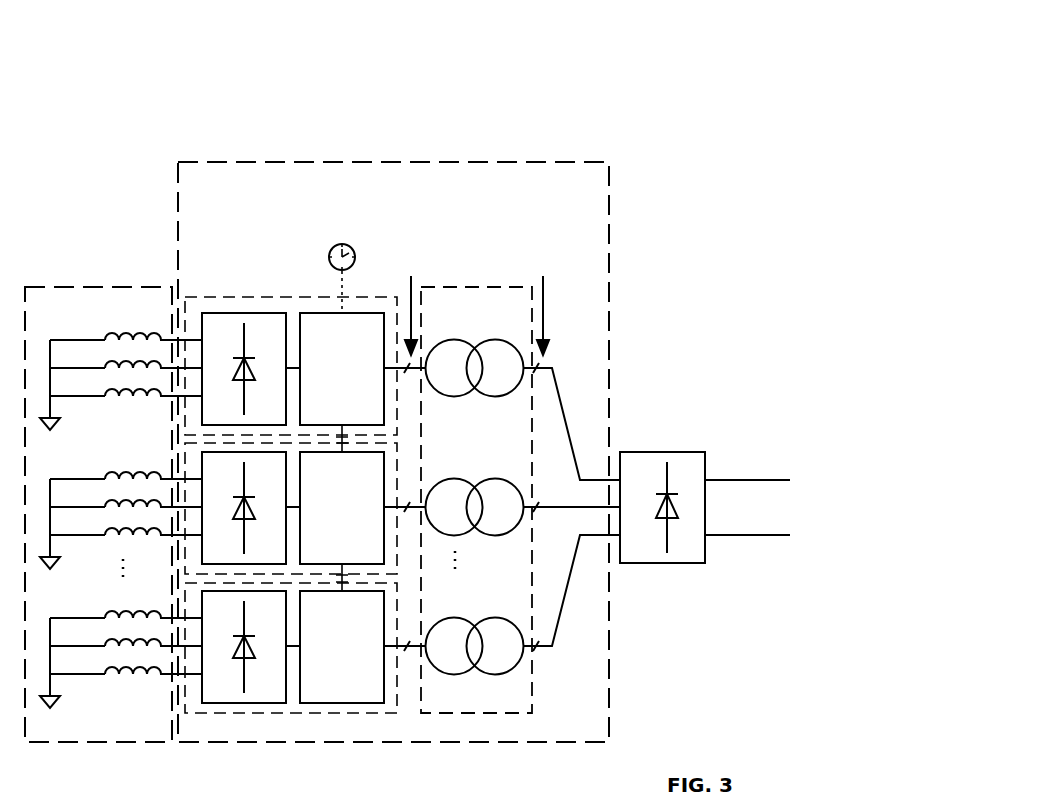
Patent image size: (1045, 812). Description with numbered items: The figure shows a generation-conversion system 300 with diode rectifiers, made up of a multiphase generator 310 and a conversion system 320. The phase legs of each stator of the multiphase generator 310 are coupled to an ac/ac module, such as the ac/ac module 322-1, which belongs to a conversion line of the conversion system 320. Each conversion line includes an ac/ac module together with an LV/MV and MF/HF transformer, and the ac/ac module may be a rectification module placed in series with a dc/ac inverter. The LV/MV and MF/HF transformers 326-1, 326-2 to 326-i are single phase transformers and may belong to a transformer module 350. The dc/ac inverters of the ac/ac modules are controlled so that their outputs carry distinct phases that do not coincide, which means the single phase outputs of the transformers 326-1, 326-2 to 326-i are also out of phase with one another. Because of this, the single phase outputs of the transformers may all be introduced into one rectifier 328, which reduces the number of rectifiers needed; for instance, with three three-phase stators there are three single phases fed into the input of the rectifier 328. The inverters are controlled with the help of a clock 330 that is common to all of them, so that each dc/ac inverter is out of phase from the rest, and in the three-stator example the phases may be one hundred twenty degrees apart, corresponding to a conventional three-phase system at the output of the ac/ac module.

The generation-conversion system 300 is at (745, 37).
The multiphase generator 310 is at (65, 287).
The conversion system 320 is at (343, 162).
The ac/ac module 322-1 is at (220, 297).
The LV/MV and MF/HF transformer 326-1 is at (453, 340).
The LV/MV and MF/HF transformer 326-2 is at (453, 479).
The LV/MV and MF/HF transformer 326-i is at (456, 618).
The output rectifier (MV DC) 328 is at (657, 452).
The clock 330 is at (355, 257).
The transformer module 350 is at (480, 287).